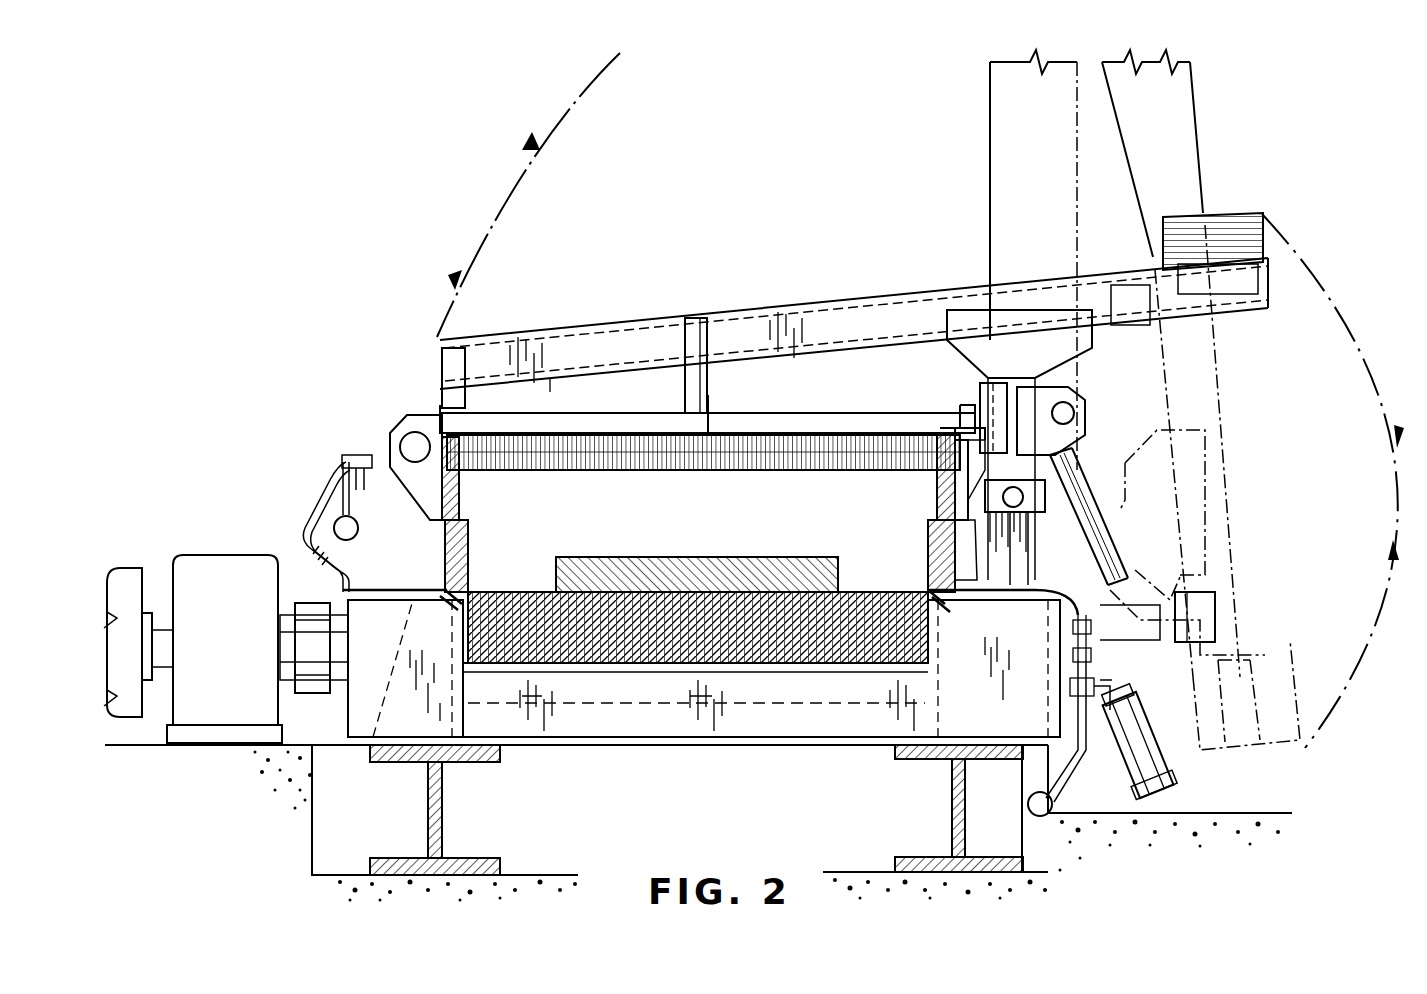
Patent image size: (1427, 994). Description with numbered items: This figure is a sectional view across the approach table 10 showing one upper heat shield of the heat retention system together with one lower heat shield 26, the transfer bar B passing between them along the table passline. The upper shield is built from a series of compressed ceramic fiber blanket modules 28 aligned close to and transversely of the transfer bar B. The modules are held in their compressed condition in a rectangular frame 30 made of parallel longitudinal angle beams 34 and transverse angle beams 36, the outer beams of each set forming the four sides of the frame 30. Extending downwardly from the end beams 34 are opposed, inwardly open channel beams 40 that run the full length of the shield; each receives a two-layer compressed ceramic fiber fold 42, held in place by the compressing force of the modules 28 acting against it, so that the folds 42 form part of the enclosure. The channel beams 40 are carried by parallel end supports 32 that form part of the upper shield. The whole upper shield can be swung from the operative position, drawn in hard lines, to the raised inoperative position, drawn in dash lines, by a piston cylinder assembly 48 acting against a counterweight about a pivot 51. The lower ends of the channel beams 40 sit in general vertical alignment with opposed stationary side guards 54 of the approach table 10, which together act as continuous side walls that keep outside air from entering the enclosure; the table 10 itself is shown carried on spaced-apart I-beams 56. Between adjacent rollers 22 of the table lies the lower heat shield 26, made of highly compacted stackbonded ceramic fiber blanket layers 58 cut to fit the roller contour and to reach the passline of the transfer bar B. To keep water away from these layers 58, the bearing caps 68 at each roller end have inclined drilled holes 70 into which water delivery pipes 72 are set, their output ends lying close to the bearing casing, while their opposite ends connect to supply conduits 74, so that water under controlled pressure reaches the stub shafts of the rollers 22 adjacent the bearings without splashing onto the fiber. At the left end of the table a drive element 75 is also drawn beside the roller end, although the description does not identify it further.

The approach table 10 is at (240, 768).
The rollers 22 is at (803, 690).
The lower heat shield 26 is at (447, 643).
The blanket modules 28 is at (545, 470).
The frame 30 is at (589, 376).
The end supports 32 is at (466, 345).
The longitudinal angle beams 34 is at (448, 425).
The transverse angle beams 36 is at (600, 413).
The channel beams 40 is at (398, 468).
The ceramic fiber folds 42 is at (463, 497).
The piston cylinder assembly 48 is at (1256, 300).
The pivot 51 is at (1016, 497).
The side guards 54 is at (470, 538).
The I-beams 56 is at (428, 797).
The blanket layers 58 is at (698, 662).
The bearing caps 68 is at (383, 598).
The inclined drilled holes 70 is at (470, 596).
The water delivery pipes 72 is at (357, 603).
The supply conduits 74 is at (333, 527).
The motor 75 is at (128, 568).
The transfer bar B is at (692, 556).